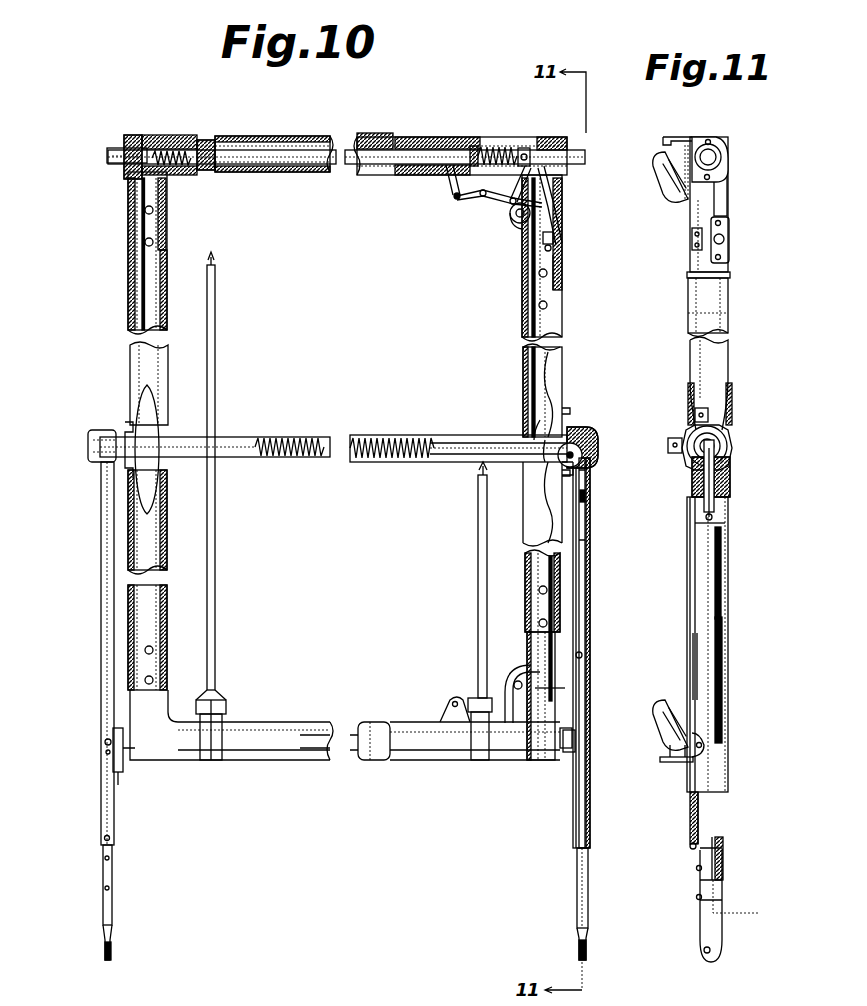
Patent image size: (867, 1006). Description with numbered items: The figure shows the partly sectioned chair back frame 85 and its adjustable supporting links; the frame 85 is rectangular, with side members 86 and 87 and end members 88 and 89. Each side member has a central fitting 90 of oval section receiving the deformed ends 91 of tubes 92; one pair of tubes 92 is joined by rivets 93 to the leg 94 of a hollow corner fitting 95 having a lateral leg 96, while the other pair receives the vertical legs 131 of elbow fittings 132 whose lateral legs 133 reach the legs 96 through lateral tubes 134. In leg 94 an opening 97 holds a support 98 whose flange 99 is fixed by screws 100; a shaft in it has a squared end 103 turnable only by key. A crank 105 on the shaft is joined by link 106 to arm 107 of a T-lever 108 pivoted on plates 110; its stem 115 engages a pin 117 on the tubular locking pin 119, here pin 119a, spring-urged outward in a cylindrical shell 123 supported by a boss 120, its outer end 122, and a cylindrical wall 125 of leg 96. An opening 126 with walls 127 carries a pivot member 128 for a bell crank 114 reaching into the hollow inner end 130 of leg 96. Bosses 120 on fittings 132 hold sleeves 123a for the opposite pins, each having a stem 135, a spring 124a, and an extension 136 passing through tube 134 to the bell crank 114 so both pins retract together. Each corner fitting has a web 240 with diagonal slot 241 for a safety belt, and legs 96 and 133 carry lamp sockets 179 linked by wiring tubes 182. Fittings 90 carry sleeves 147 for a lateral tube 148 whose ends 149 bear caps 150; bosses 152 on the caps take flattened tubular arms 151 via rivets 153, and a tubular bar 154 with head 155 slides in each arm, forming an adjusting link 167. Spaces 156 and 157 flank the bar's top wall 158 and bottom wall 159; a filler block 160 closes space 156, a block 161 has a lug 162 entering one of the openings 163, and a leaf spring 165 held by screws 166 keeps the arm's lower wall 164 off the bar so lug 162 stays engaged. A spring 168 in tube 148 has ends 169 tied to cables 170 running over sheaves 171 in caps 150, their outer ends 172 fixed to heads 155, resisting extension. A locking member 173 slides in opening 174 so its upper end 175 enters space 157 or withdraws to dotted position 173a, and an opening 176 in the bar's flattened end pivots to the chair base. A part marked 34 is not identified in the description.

In FIG. 10, the tube 34 is at (300, 762).
In FIG. 10, the lower horizontal tube 85 is at (295, 720).
In FIG. 10, the upright tube section 86 is at (136, 366).
In FIG. 10, the upright tube section 87 is at (527, 362).
In FIG. 10, the upper horizontal tube 88 is at (388, 138).
In FIG. 10, the lower horizontal tube 89 is at (380, 720).
In FIG. 10, the bulged bearing portion 90 is at (146, 405).
In FIG. 11, the bulged bearing portion 90 is at (690, 408).
In FIG. 10, the inner rod 91 is at (552, 390).
In FIG. 11, the inner rod 91 is at (716, 392).
In FIG. 10, the upright tube 92 is at (132, 310).
In FIG. 11, the upright tube 92 is at (730, 322).
In FIG. 10, the holes 93 is at (540, 620).
In FIG. 10, the inner plate 94 is at (530, 300).
In FIG. 10, the pin 95 is at (548, 275).
In FIG. 10, the hatched strip 96 is at (458, 150).
In FIG. 10, the plate 97 is at (548, 218).
In FIG. 10, the strip 98 is at (556, 264).
In FIG. 11, the tube 99 is at (726, 208).
In FIG. 11, the plate 100 is at (727, 256).
In FIG. 11, the nut 103 is at (724, 232).
In FIG. 10, the pin 105 is at (552, 248).
In FIG. 10, the block 106 is at (553, 236).
In FIG. 10, the roller 107 is at (518, 224).
In FIG. 10, the link 108 is at (520, 195).
In FIG. 10, the arm 110 is at (505, 700).
In FIG. 10, the pivot 114 is at (454, 198).
In FIG. 10, the link 115 is at (556, 192).
In FIG. 10, the nut 117 is at (522, 150).
In FIG. 10, the rod 119 is at (586, 157).
In FIG. 10, the rod end 119a is at (118, 160).
In FIG. 10, the corner fitting 120 is at (130, 135).
In FIG. 11, the corner fitting 120 is at (720, 148).
In FIG. 10, the block 122 is at (568, 150).
In FIG. 10, the bushing 123 is at (540, 158).
In FIG. 10, the bushing 123a is at (132, 182).
In FIG. 10, the spring 124a is at (204, 145).
In FIG. 10, the spring 125 is at (482, 148).
In FIG. 10, the link 126 is at (445, 180).
In FIG. 10, the lug 127 is at (450, 712).
In FIG. 10, the link 128 is at (456, 200).
In FIG. 10, the sleeve 130 is at (440, 150).
In FIG. 10, the lining 131 is at (138, 200).
In FIG. 10, the wall 132 is at (166, 196).
In FIG. 10, the bracket 133 is at (212, 145).
In FIG. 10, the tube 134 is at (292, 138).
In FIG. 10, the rod 135 is at (220, 164).
In FIG. 10, the block 136 is at (357, 140).
In FIG. 10, the clip 147 is at (172, 432).
In FIG. 10, the rod 148 is at (248, 460).
In FIG. 10, the bracket 149 is at (572, 428).
In FIG. 11, the bracket 149 is at (730, 420).
In FIG. 10, the bearing hub 150 is at (90, 432).
In FIG. 11, the bearing hub 150 is at (690, 428).
In FIG. 10, the rod 151 is at (101, 520).
In FIG. 11, the rod 151 is at (722, 562).
In FIG. 10, the block 152 is at (590, 472).
In FIG. 11, the block 152 is at (730, 478).
In FIG. 11, the block 153 is at (692, 485).
In FIG. 10, the rod section 154 is at (103, 852).
In FIG. 11, the rod section 154 is at (694, 606).
In FIG. 10, the inner rod 155 is at (586, 543).
In FIG. 11, the inner rod 155 is at (724, 527).
In FIG. 11, the tube 156 is at (696, 790).
In FIG. 11, the rod 157 is at (720, 775).
In FIG. 11, the rod 158 is at (700, 812).
In FIG. 11, the rod 159 is at (720, 800).
In FIG. 11, the ring 160 is at (700, 850).
In FIG. 11, the hook 161 is at (688, 740).
In FIG. 11, the bracket 162 is at (696, 762).
In FIG. 11, the rod 163 is at (692, 665).
In FIG. 11, the rod 164 is at (722, 745).
In FIG. 11, the rod 165 is at (722, 700).
In FIG. 11, the rod 166 is at (722, 640).
In FIG. 10, the rod assembly 167 is at (94, 631).
In FIG. 11, the rod assembly 167 is at (738, 594).
In FIG. 10, the spring 168 is at (398, 460).
In FIG. 10, the spring 169 is at (250, 440).
In FIG. 10, the rod 170 is at (460, 462).
In FIG. 10, the pivot pin 171 is at (582, 455).
In FIG. 11, the pivot pin 171 is at (730, 440).
In FIG. 10, the pin 172 is at (588, 496).
In FIG. 11, the pin 172 is at (730, 505).
In FIG. 10, the rod end 173 is at (580, 860).
In FIG. 11, the rod end 173 is at (720, 866).
In FIG. 11, the rod end 173a is at (759, 896).
In FIG. 11, the holes 174 is at (700, 884).
In FIG. 11, the sleeve 175 is at (722, 840).
In FIG. 10, the tip 176 is at (588, 950).
In FIG. 11, the tip 176 is at (716, 956).
In FIG. 10, the fitting 179 is at (215, 762).
In FIG. 11, the fitting 179 is at (667, 135).
In FIG. 10, the rod 182 is at (216, 598).
In FIG. 10, the hook 240 is at (566, 728).
In FIG. 11, the hook 240 is at (672, 178).
In FIG. 11, the plate 241 is at (694, 214).